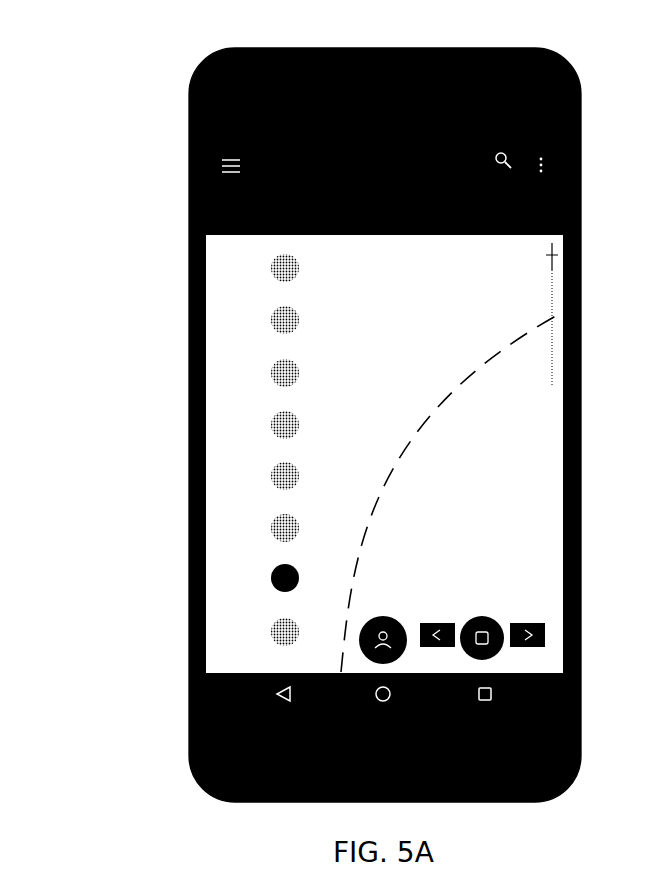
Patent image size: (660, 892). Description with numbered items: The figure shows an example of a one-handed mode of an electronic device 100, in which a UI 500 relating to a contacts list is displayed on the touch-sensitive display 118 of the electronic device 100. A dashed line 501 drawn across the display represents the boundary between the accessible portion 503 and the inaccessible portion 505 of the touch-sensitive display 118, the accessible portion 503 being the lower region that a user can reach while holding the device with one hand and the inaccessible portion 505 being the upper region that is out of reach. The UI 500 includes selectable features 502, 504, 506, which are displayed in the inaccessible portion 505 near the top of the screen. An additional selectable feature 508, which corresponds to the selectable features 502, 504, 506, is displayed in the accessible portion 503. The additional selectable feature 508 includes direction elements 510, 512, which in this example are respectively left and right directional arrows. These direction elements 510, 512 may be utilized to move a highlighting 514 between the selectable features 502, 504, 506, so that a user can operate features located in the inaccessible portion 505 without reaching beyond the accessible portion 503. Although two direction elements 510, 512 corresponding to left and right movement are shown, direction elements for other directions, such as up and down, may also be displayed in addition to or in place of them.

The electronic device 100 is at (285, 47).
The touch-sensitive display 118 is at (213, 257).
The UI 500 is at (582, 248).
The dashed line 501 is at (473, 356).
The selectable feature 502 is at (211, 157).
The accessible portion 503 is at (508, 511).
The selectable feature 504 is at (503, 167).
The inaccessible portion 505 is at (459, 279).
The selectable feature 506 is at (545, 167).
The additional selectable feature 508 is at (488, 620).
The direction element 510 is at (453, 625).
The direction element 512 is at (543, 637).
The highlighting 514 is at (211, 186).